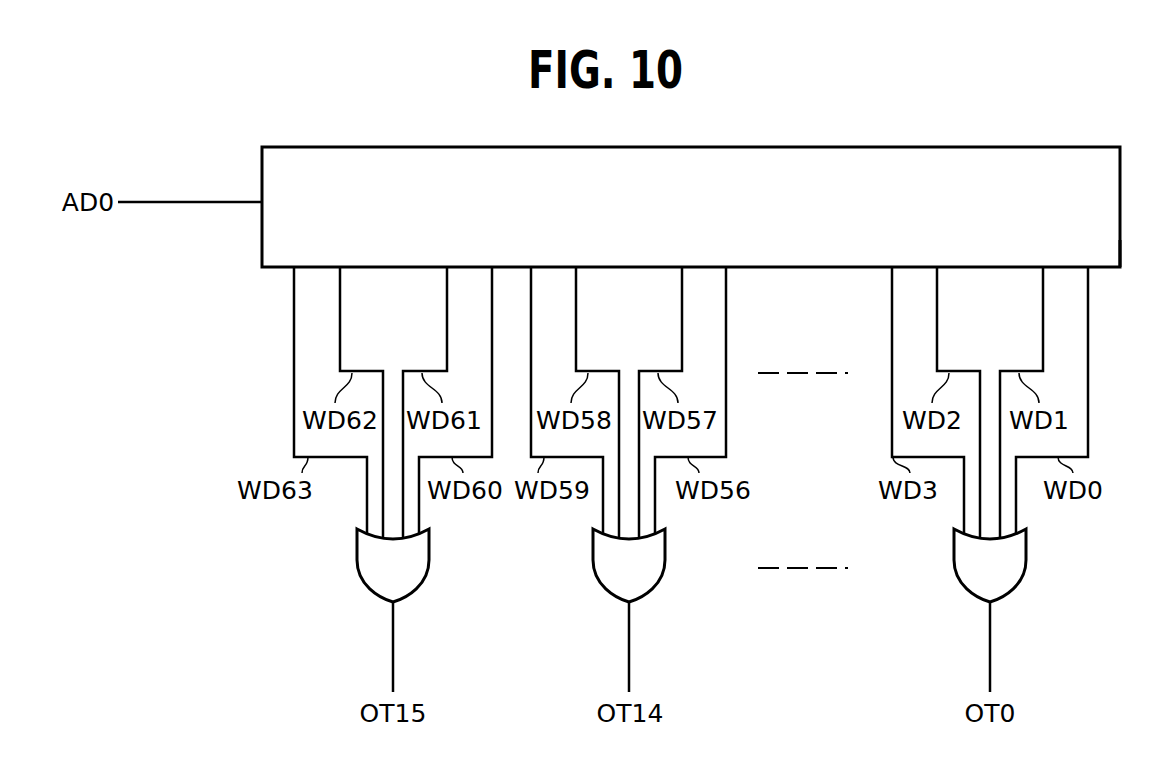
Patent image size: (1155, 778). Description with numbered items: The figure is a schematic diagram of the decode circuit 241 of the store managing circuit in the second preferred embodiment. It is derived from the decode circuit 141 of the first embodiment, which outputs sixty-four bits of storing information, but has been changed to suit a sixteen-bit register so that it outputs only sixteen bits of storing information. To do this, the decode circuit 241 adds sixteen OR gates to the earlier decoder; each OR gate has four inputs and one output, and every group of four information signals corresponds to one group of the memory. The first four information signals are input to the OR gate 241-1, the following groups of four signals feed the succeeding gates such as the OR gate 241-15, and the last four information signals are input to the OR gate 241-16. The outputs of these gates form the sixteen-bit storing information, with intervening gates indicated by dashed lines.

The decode circuit 241 is at (948, 123).
The decode circuit 141 is at (1120, 255).
The OR gate 241-16 is at (358, 573).
The OR gate 241-15 is at (661, 572).
The OR gate 241-1 is at (1023, 573).